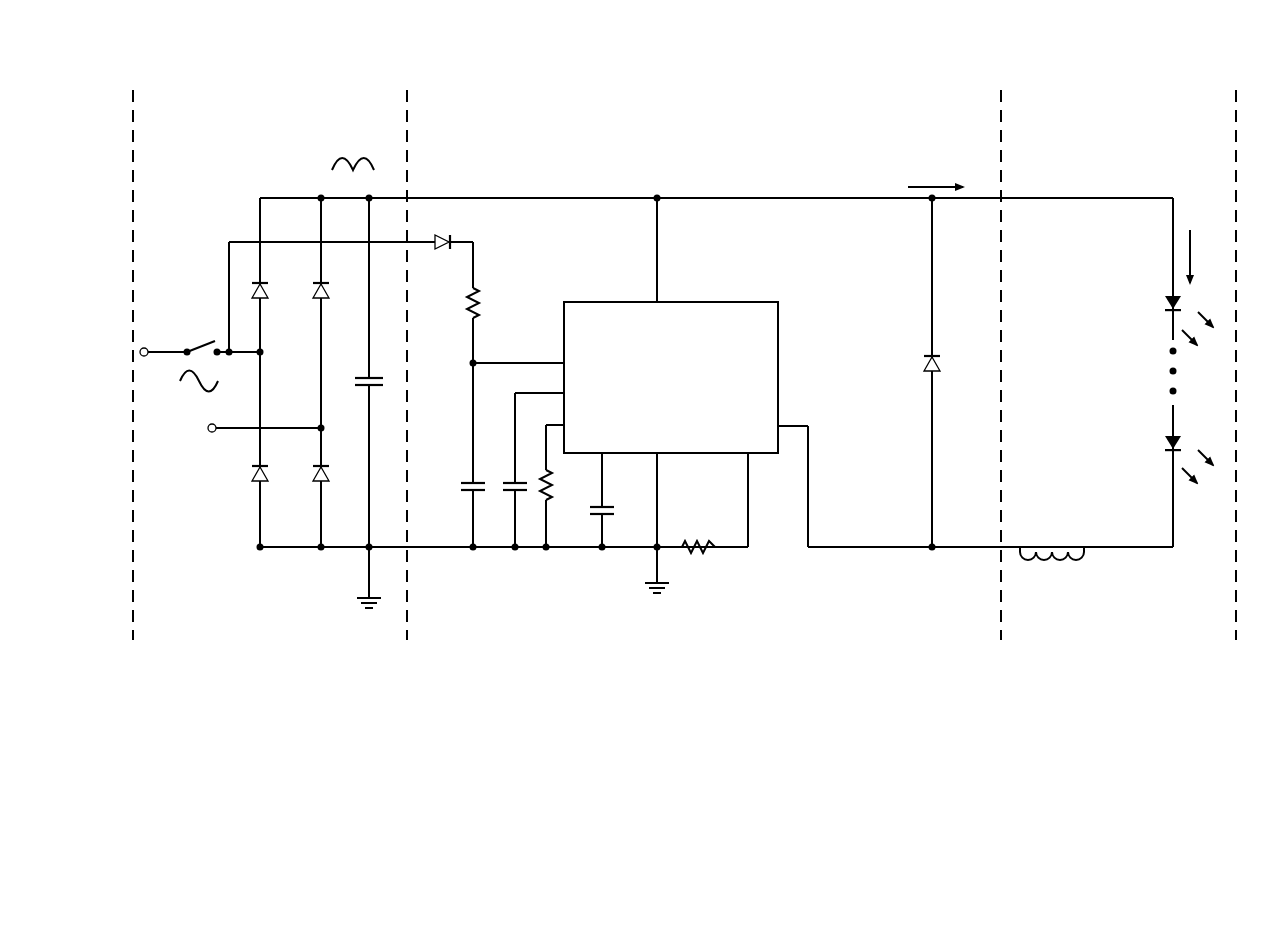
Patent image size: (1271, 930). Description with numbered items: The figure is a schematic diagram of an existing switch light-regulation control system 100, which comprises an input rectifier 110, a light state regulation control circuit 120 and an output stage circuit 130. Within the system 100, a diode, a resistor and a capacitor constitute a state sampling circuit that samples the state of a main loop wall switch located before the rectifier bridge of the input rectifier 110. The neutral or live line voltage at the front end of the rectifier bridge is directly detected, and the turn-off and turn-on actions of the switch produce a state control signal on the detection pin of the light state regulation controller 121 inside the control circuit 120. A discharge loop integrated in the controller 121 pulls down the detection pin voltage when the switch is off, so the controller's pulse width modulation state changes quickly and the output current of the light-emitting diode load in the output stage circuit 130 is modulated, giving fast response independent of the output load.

The switch light-regulation control system 100 is at (222, 36).
The input rectifier 110 is at (284, 365).
The light state regulation control circuit 120 is at (716, 365).
The light state regulation controller 121 is at (671, 377).
The output stage circuit 130 is at (1128, 365).